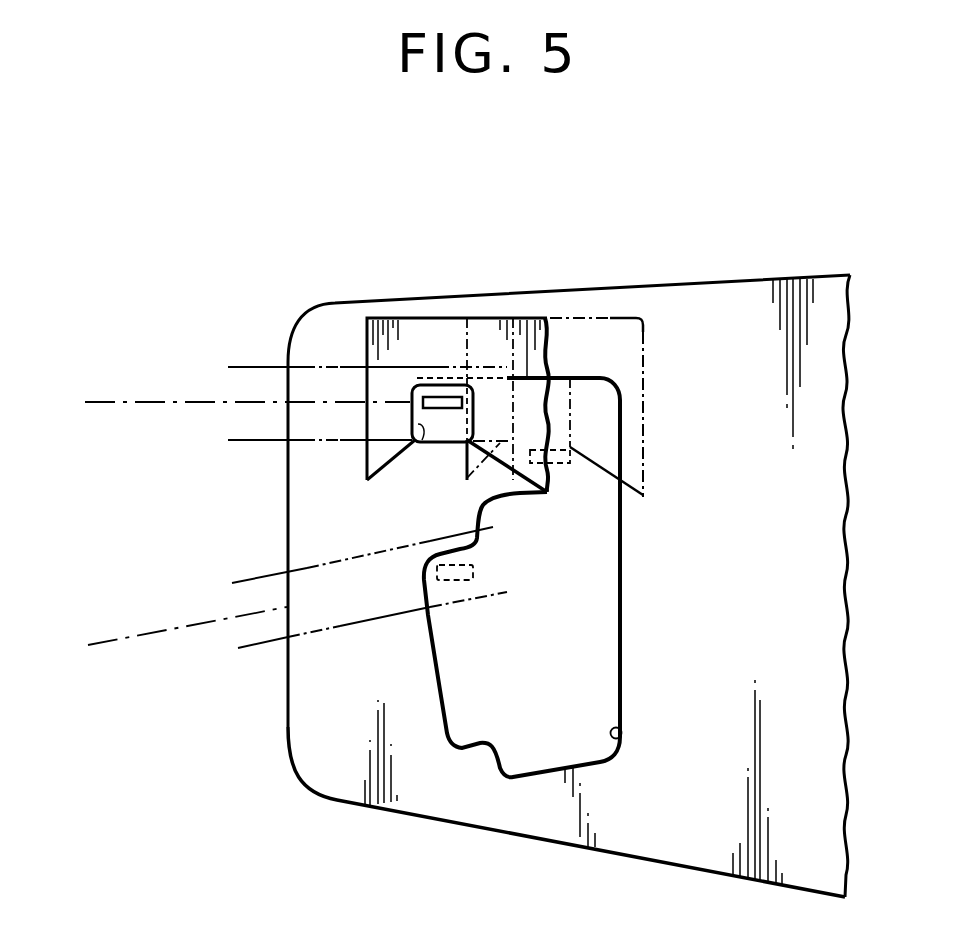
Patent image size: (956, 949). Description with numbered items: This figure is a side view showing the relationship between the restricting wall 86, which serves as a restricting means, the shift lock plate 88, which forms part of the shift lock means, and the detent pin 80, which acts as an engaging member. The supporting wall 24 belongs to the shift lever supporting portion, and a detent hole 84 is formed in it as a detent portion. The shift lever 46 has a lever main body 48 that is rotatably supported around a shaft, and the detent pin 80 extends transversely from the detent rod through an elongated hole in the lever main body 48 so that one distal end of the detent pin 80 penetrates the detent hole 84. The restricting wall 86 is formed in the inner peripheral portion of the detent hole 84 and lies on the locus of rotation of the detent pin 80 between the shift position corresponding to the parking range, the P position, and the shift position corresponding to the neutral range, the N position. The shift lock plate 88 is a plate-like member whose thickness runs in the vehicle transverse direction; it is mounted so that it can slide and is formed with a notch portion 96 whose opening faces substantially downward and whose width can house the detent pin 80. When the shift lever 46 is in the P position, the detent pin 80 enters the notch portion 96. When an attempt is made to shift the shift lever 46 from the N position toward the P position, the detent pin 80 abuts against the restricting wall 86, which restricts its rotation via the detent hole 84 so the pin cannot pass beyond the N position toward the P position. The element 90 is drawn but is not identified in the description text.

The supporting wall 24 is at (620, 857).
The shift lever 46 is at (222, 338).
The lever main body 48 is at (265, 365).
The detent pin 80 is at (438, 397).
The detent hole 84 is at (623, 743).
The restricting wall 86 is at (517, 493).
The shift lock plate 88 is at (400, 328).
The partition 90 is at (543, 317).
The notch portion 96 is at (416, 443).